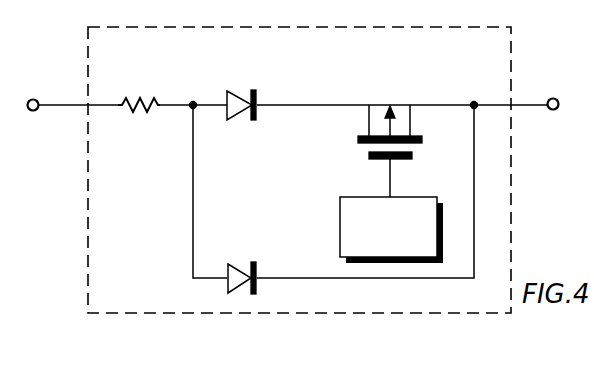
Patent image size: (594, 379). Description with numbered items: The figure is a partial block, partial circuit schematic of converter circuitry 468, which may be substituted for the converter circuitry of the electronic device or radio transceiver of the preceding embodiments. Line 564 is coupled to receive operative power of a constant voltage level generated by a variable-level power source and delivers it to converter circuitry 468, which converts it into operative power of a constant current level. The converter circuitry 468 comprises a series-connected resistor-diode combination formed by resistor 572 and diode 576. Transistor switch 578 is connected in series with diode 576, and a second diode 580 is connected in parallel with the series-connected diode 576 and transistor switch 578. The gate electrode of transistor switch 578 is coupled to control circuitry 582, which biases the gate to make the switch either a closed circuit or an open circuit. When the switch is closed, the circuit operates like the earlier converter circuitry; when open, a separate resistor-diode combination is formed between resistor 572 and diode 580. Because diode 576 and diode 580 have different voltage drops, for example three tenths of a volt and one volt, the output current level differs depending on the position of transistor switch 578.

The converter circuitry 468 is at (222, 27).
The line 564 is at (50, 106).
The resistor 572 is at (141, 101).
The diode 576 is at (240, 93).
The transistor switch 578 is at (370, 111).
The second diode 580 is at (229, 270).
The control circuitry 582 is at (368, 197).